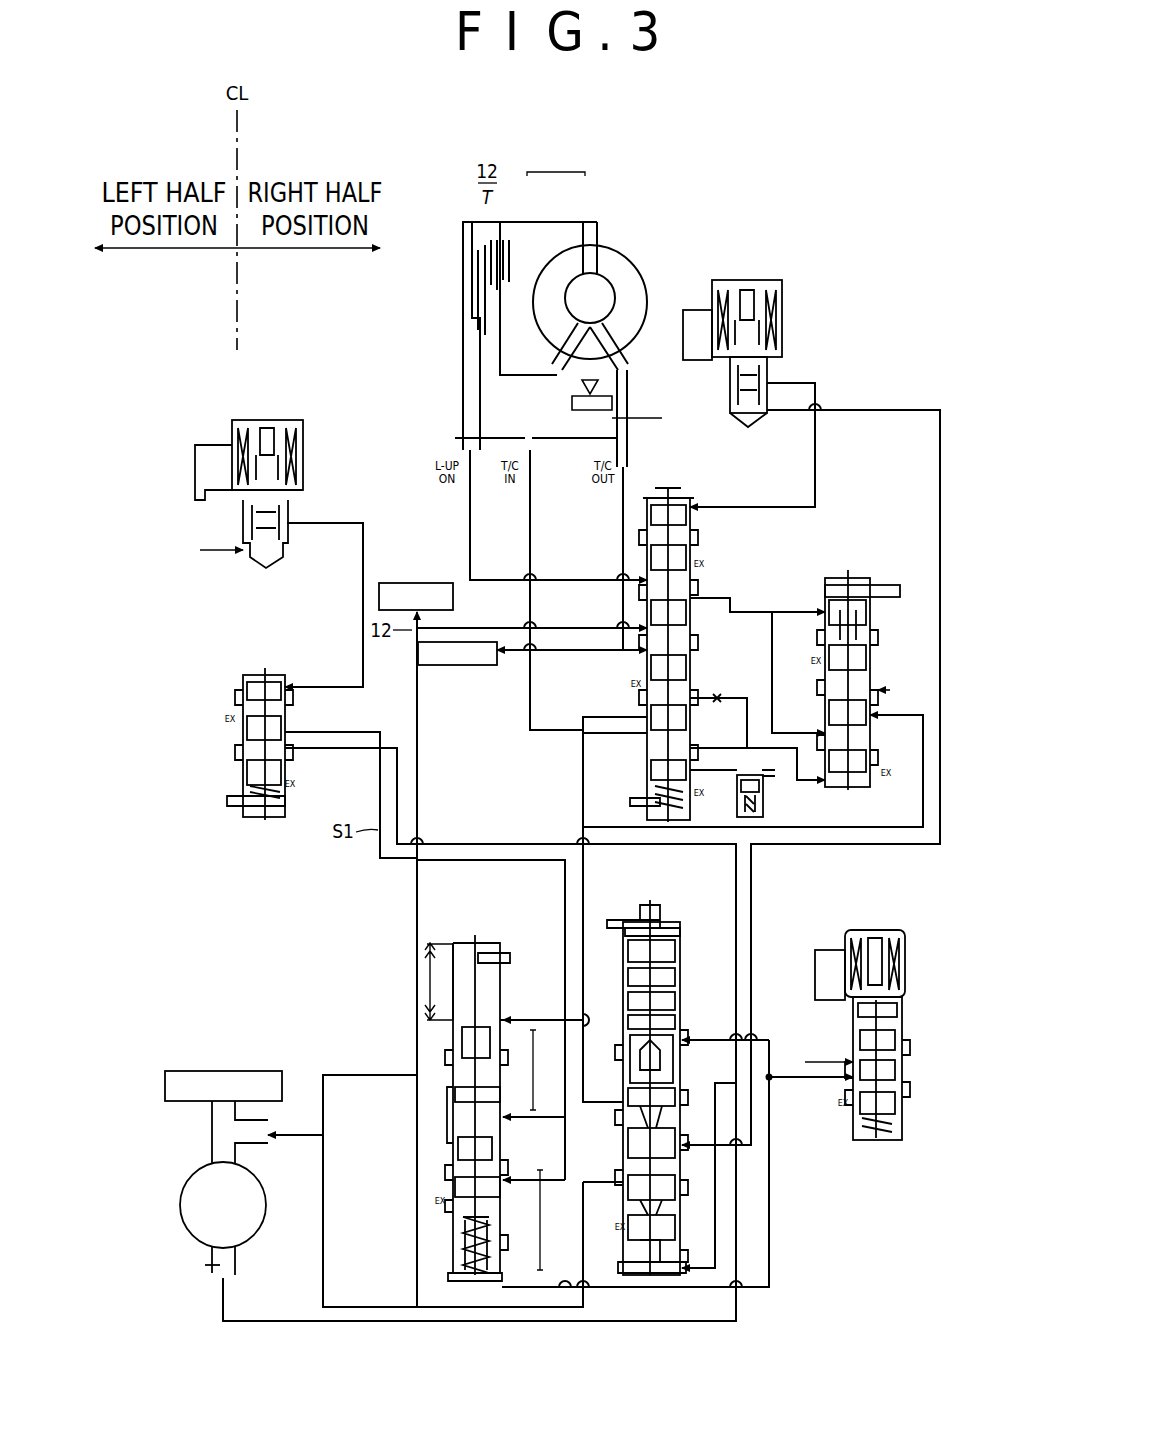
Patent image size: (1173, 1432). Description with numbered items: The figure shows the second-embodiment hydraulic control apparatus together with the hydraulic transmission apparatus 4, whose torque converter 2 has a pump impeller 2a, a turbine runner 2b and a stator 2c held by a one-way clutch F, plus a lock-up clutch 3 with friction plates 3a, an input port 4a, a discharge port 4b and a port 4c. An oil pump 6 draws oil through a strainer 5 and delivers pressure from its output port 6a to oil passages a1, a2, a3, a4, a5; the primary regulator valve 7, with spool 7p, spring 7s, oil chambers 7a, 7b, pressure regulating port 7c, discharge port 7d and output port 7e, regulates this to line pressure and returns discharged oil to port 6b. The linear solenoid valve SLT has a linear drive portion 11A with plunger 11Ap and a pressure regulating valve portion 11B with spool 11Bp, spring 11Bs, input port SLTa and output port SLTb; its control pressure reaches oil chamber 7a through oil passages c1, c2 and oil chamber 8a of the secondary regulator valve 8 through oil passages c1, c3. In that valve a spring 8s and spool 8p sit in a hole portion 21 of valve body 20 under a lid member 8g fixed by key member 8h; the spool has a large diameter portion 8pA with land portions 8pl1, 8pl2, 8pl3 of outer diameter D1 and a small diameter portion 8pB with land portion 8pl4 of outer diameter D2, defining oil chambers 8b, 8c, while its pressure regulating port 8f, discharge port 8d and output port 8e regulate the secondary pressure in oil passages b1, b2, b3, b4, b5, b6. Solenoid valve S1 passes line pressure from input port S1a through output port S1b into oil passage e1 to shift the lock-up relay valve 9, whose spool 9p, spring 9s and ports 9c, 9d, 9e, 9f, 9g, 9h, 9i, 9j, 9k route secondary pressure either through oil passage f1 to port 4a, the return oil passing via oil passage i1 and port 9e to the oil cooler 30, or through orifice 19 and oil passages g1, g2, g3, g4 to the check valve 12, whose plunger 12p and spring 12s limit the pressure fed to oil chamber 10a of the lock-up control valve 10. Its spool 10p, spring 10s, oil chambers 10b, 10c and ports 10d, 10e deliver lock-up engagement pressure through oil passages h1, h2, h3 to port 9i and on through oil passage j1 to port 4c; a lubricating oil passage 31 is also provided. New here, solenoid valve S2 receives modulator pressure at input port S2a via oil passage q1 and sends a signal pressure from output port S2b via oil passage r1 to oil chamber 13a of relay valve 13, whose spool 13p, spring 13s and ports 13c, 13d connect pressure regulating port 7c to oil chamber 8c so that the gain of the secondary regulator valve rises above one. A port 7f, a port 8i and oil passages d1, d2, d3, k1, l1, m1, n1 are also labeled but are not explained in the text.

The torque converter 2 is at (582, 225).
The pump impeller 2a is at (637, 280).
The turbine runner 2b is at (545, 327).
The stator 2c is at (575, 365).
The lock-up clutch 3 is at (520, 250).
The friction plates 3a is at (486, 351).
The hydraulic transmission apparatus 4 is at (556, 159).
The input port 4a is at (532, 440).
The discharge port 4b is at (628, 440).
The port 4c is at (462, 440).
The one-way clutch F is at (572, 410).
The check valve 12 is at (770, 803).
The strainer 5 is at (220, 1068).
The oil pump 6 is at (190, 1178).
The output port 6a is at (205, 1266).
The port 6b is at (258, 1140).
The primary regulator valve 7 is at (665, 922).
The oil chamber 7a is at (668, 1030).
The oil chamber 7b is at (660, 1273).
The pressure regulating port 7c is at (678, 1160).
The discharge port 7d is at (626, 1200).
The output port 7e is at (622, 1102).
The port 7f is at (626, 1135).
The spool 7p is at (628, 1165).
The spring 7s is at (632, 1042).
The secondary regulator valve 8 is at (478, 935).
The oil chamber 8a is at (496, 1265).
The oil chamber 8b is at (455, 1024).
The oil chamber 8c is at (458, 1175).
The discharge port 8d is at (455, 1095).
The output port 8e is at (458, 1140).
The pressure regulating port 8f is at (490, 1120).
The lid member 8g is at (490, 985).
The key member 8h is at (514, 965).
The port 8i is at (458, 1115).
The spool 8p is at (488, 1036).
The land portion 8pl1 is at (490, 1052).
The land portion 8pl2 is at (488, 1092).
The land portion 8pl3 is at (490, 1148).
The land portion 8pl4 is at (495, 1195).
The large diameter portion 8pA is at (508, 1093).
The small diameter portion 8pB is at (518, 1222).
The spring 8s is at (496, 1240).
The lock-up relay valve 9 is at (705, 532).
The port 9c is at (648, 578).
The port 9d is at (646, 628).
The port 9e is at (646, 660).
The port 9f is at (640, 680).
The port 9g is at (646, 718).
The port 9h is at (646, 738).
The port 9i is at (694, 598).
The port 9j is at (697, 679).
The port 9k is at (692, 745).
The spool 9p is at (692, 614).
The spring 9s is at (684, 775).
The lock-up control valve 10 is at (852, 572).
The oil chamber 10a is at (845, 790).
The oil chamber 10b is at (870, 615).
The oil chamber 10c is at (878, 685).
The port 10d is at (878, 722).
The port 10e is at (822, 730).
The spool 10p is at (820, 705).
The spring 10s is at (866, 636).
The linear drive portion 11A is at (908, 990).
The plunger 11Ap is at (880, 957).
The pressure regulating valve portion 11B is at (906, 1085).
The spool 11Bp is at (878, 1060).
The spring 11Bs is at (895, 1125).
The plunger 12p is at (730, 790).
The spring 12s is at (740, 820).
The relay valve 13 is at (455, 628).
The oil chamber 13a is at (268, 685).
The port 13c is at (290, 728).
The port 13d is at (290, 752).
The spool 13p is at (290, 703).
The spring 13s is at (290, 778).
The orifice 19 is at (717, 690).
The valve body 20 is at (506, 942).
The hole portion 21 is at (458, 960).
The oil cooler 30 is at (456, 668).
The lubricating oil passage 31 is at (403, 580).
The solenoid valve S1 is at (768, 275).
The input port S1a is at (778, 410).
The output port S1b is at (780, 380).
The solenoid valve S2 is at (287, 415).
The input port S2a is at (250, 565).
The output port S2b is at (295, 522).
The linear solenoid valve SLT is at (885, 928).
The input port SLTa is at (850, 1060).
The output port SLTb is at (848, 1100).
The oil passage a1 is at (645, 1323).
The oil passage a2 is at (698, 1140).
The oil passage a3 is at (714, 1212).
The oil passage a4 is at (753, 925).
The oil passage a5 is at (735, 925).
The oil passage b1 is at (610, 1106).
The oil passage b2 is at (560, 1125).
The oil passage b3 is at (556, 1018).
The oil passage b4 is at (586, 882).
The oil passage b5 is at (585, 800).
The oil passage b6 is at (762, 845).
The oil passage c1 is at (778, 1080).
The oil passage c2 is at (710, 1040).
The oil passage c3 is at (771, 1236).
The oil passage d1 is at (585, 1272).
The oil passage d2 is at (372, 1076).
The oil passage d3 is at (290, 1135).
The oil passage e1 is at (818, 450).
The oil passage f1 is at (536, 733).
The oil passage g1 is at (742, 700).
The oil passage g2 is at (790, 765).
The oil passage g3 is at (733, 745).
The oil passage g4 is at (780, 769).
The oil passage h1 is at (774, 636).
The oil passage h2 is at (782, 610).
The oil passage h3 is at (740, 610).
The oil passage i1 is at (621, 514).
The oil passage j1 is at (578, 580).
The oil passage k1 is at (572, 652).
The oil passage l1 is at (420, 796).
The oil passage m1 is at (885, 700).
The oil passage n1 is at (781, 1063).
The oil passage q1 is at (214, 552).
The oil passage r1 is at (355, 535).
The outer diameter D1 is at (460, 1166).
The outer diameter D2 is at (458, 1205).